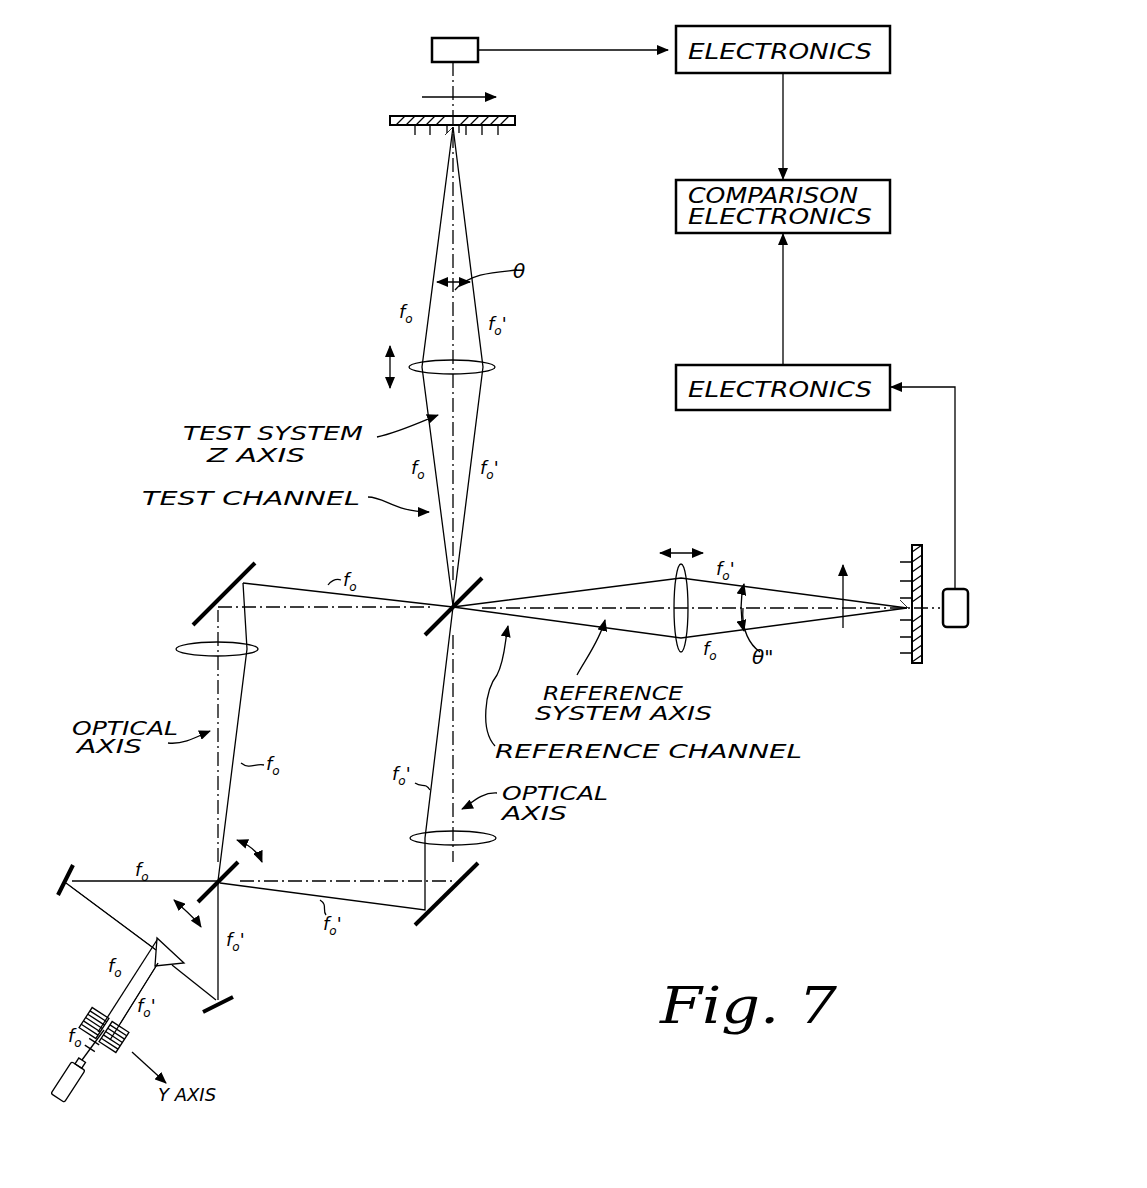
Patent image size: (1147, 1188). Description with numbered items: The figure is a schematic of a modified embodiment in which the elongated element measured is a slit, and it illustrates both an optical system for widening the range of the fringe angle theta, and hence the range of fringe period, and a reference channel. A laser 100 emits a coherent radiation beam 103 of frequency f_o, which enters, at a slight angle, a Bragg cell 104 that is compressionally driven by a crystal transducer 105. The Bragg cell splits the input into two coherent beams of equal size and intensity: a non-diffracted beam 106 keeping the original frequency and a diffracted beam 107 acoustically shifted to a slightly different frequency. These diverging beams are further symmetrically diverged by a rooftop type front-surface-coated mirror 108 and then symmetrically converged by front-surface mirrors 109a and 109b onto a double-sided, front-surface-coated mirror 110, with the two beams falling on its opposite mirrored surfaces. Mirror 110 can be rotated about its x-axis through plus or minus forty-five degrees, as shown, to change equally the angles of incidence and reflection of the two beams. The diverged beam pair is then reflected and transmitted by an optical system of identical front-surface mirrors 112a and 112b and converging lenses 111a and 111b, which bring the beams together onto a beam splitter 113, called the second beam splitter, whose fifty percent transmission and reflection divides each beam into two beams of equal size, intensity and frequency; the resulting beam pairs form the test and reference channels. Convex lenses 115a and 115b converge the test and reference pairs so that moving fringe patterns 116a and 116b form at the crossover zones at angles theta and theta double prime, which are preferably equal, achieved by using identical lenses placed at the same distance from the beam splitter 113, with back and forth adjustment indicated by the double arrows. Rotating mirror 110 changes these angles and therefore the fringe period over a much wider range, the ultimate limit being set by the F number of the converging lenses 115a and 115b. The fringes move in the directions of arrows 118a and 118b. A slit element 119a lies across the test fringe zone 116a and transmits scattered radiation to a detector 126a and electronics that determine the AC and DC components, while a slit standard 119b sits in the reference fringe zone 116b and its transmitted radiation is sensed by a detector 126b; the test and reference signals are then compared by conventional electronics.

The laser 100 is at (73, 1099).
The coherent radiation beam 103 is at (93, 1054).
The Bragg cell 104 is at (92, 1011).
The crystal transducer 105 is at (130, 1050).
The non-diffracted beam 106 is at (154, 952).
The diffracted beam 107 is at (163, 975).
The rooftop front-surface-coated mirror 108 is at (167, 929).
The front-surface mirror 109a is at (66, 864).
The front-surface mirror 109b is at (232, 1003).
The double-sided front-surface-coated mirror 110 is at (240, 865).
The converging lens 111a is at (186, 657).
The converging lens 111b is at (490, 843).
The front surface mirror 112a is at (228, 588).
The front surface mirror 112b is at (448, 903).
The beam splitter 113 is at (515, 570).
The convex lens 115a is at (493, 368).
The convex lens 115b is at (673, 574).
The moving fringe pattern 116a is at (442, 137).
The moving fringe pattern 116b is at (898, 592).
The arrow 118a is at (428, 95).
The arrow 118b is at (840, 593).
The slit element 119a is at (392, 126).
The slit standard 119b is at (906, 660).
The detector 126a is at (448, 36).
The detector 126b is at (955, 630).